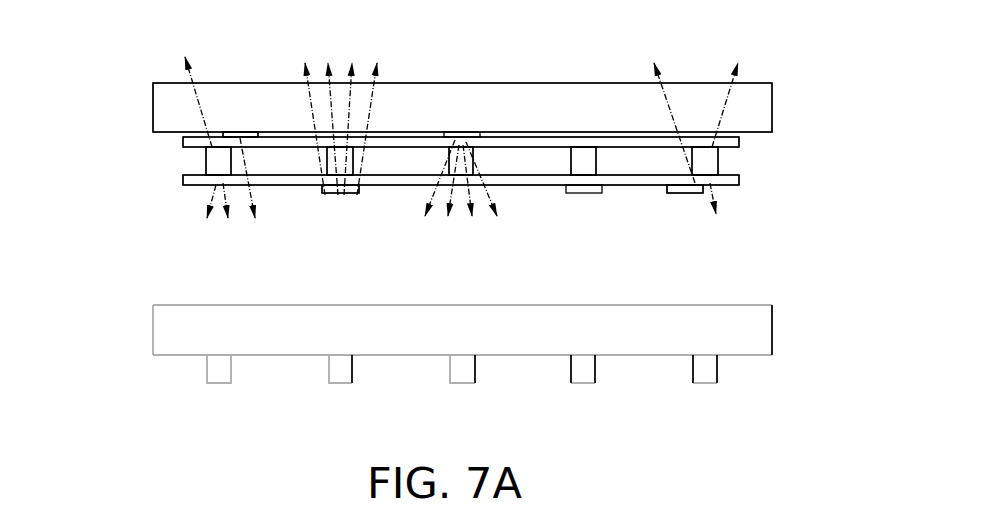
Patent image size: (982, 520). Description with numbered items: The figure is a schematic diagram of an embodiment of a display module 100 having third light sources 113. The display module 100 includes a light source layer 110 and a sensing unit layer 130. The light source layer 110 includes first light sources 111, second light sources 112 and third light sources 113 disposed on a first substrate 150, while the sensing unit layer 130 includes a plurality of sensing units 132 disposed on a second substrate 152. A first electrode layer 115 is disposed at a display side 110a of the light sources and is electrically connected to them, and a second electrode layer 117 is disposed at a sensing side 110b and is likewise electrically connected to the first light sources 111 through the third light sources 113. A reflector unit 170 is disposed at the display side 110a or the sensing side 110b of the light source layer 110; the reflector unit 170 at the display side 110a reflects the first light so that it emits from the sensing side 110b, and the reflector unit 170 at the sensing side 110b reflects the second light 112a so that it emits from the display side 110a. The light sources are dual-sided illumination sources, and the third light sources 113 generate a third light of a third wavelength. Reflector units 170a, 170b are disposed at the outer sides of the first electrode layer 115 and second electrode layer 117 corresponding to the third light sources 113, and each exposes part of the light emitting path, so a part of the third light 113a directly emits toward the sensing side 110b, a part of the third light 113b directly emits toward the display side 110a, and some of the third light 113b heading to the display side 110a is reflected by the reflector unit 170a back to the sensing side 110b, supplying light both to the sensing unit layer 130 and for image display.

The display module 100 is at (166, 33).
The display side 110a is at (165, 63).
The first substrate 150 is at (162, 108).
The light source layer 110 is at (142, 138).
The first electrode layer 115 is at (742, 141).
The second electrode layer 117 is at (742, 180).
The second light source 112 is at (582, 160).
The second light 112a is at (378, 53).
The reflector unit 170 is at (458, 137).
The reflector unit 170a is at (246, 137).
The reflector unit 170b is at (680, 192).
The third light source 113 is at (228, 175).
The third light 113a is at (213, 200).
The third light 113b is at (195, 75).
The first light source 111 is at (470, 185).
The sensing side 110b is at (165, 270).
The second substrate 152 is at (165, 330).
The sensing unit layer 130 is at (142, 360).
The sensing unit 132 is at (243, 367).